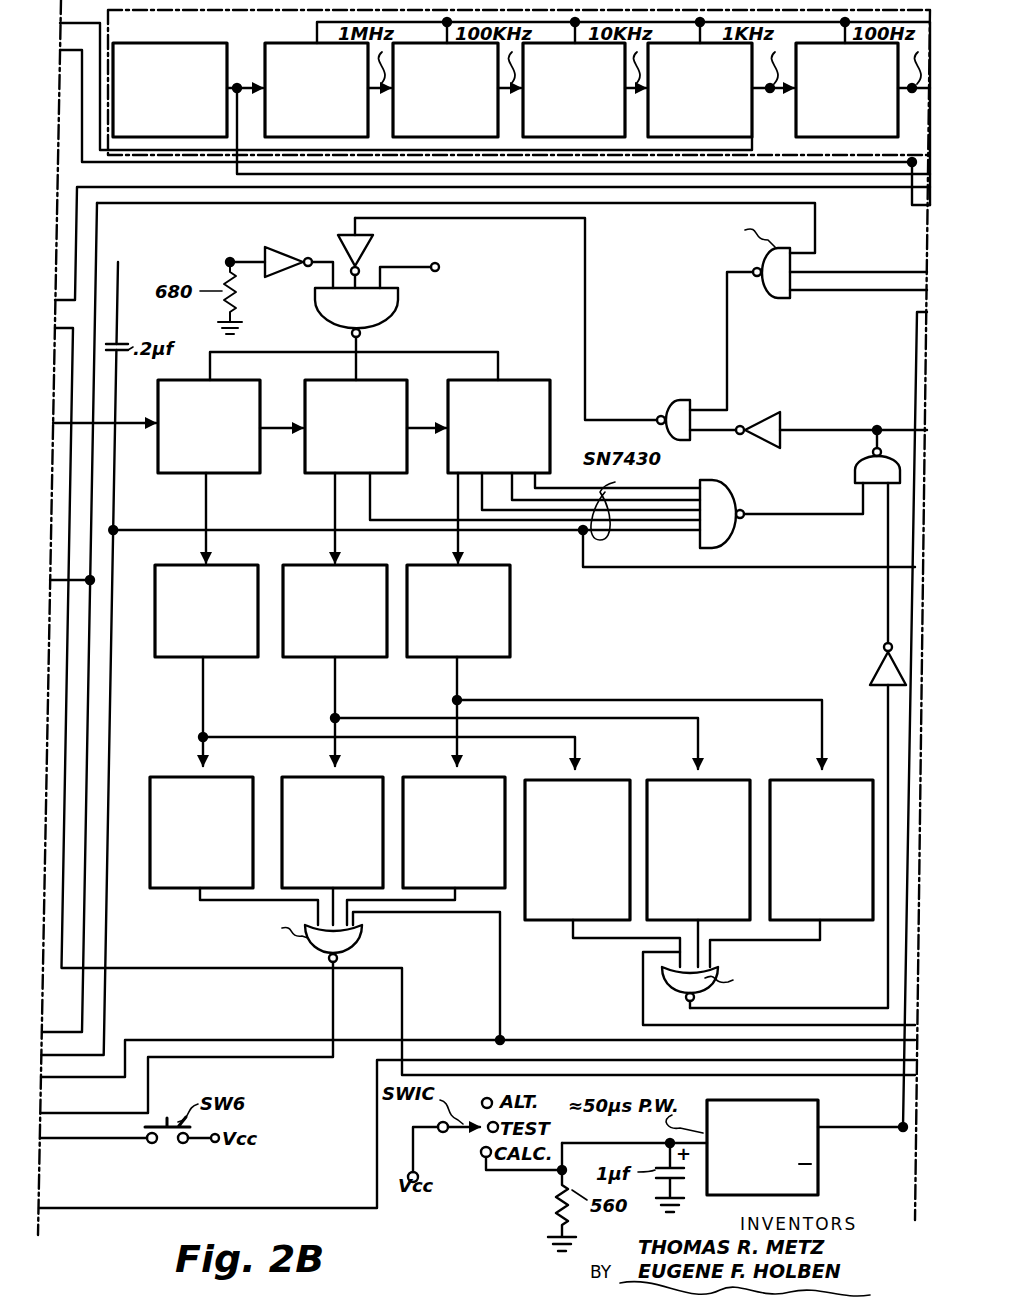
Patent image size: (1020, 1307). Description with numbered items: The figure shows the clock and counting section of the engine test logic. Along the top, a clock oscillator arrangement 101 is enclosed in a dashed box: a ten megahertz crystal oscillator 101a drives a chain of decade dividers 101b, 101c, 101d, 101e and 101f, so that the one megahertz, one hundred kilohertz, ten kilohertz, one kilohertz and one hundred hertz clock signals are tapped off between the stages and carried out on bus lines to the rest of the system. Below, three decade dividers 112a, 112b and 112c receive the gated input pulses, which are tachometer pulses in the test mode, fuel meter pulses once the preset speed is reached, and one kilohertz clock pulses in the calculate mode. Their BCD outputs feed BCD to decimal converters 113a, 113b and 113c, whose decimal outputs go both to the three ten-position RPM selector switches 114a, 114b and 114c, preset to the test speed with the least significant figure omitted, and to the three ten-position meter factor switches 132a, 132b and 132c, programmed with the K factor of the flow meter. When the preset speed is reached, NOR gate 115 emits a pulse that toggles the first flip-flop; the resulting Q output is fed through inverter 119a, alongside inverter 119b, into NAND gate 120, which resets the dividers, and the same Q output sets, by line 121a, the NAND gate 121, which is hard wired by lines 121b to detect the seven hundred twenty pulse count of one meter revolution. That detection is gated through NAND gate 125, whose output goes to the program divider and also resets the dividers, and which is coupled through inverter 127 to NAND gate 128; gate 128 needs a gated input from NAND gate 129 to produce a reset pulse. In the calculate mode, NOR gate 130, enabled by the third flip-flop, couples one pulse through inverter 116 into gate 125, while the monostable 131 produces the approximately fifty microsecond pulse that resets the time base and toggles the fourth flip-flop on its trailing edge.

The clock oscillator arrangement 101 is at (195, 152).
The 10 mega-hertz crystal oscillator 101a is at (212, 45).
The decade divider 101b is at (303, 45).
The decade divider 101c is at (468, 137).
The decade divider 101d is at (588, 137).
The decade divider 101e is at (745, 133).
The decade divider 101f is at (865, 137).
The decade divider 112a is at (238, 473).
The decade divider 112b is at (386, 473).
The decade divider 112c is at (540, 368).
The BCD to decimal converter 113a is at (240, 657).
The BCD to decimal converter 113b is at (372, 657).
The BCD to decimal converter 113c is at (505, 648).
The ten-position RPM selector switch 114a is at (172, 780).
The ten-position RPM selector switch 114b is at (300, 780).
The ten-position RPM selector switch 114c is at (425, 780).
The NOR gate 115 is at (350, 935).
The inverter 116 is at (882, 676).
The inverter 119a is at (284, 256).
The inverter 119b is at (366, 250).
The NAND gate 120 is at (373, 312).
The NAND gate 121 is at (730, 530).
The line 121a is at (542, 540).
The lines 121b is at (535, 504).
The NAND gate 125 is at (854, 536).
The inverter 127 is at (773, 418).
The NAND gate 128 is at (664, 400).
The NAND gate 129 is at (786, 296).
The NOR gate 130 is at (779, 988).
The monostable 131 is at (812, 1186).
The ten-position meter factor switch 132a is at (620, 760).
The ten-position meter factor switch 132b is at (742, 760).
The ten-position meter factor switch 132c is at (855, 760).